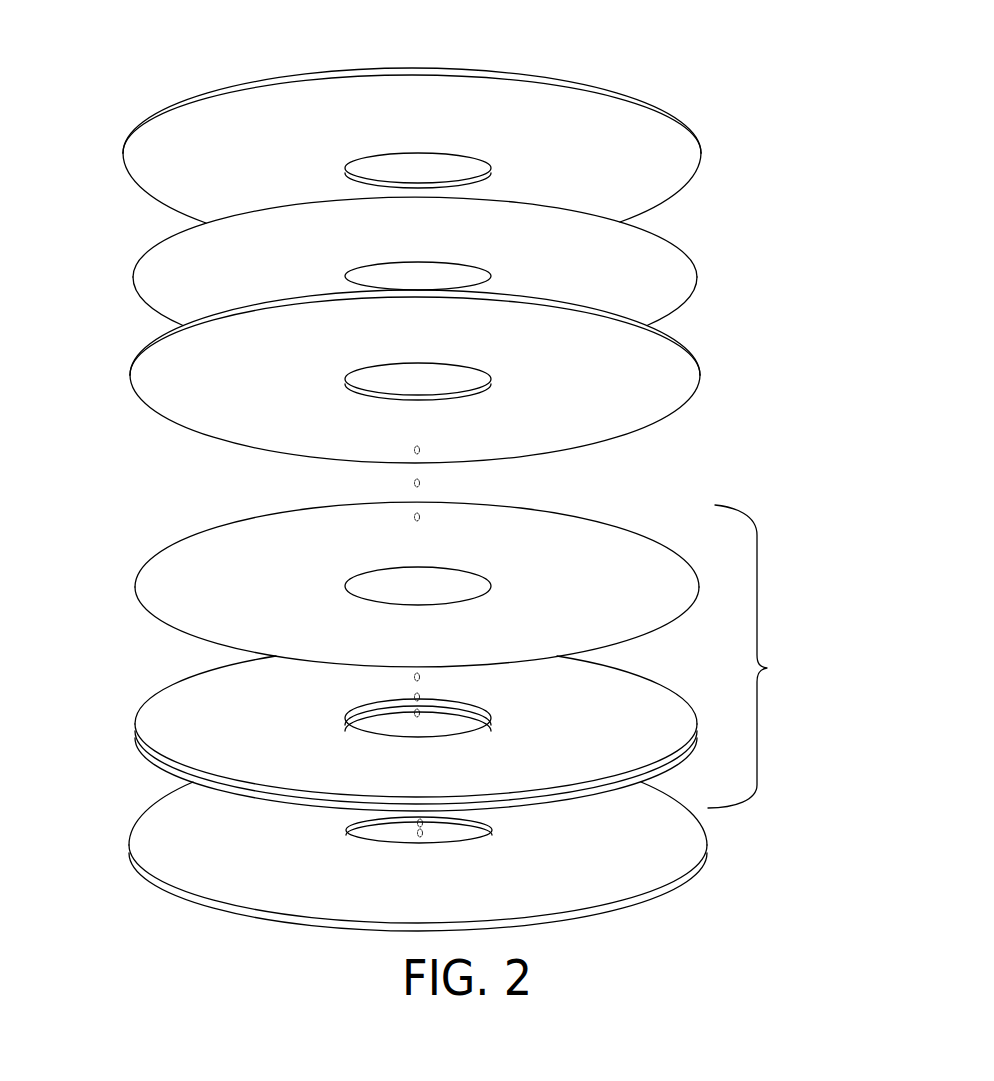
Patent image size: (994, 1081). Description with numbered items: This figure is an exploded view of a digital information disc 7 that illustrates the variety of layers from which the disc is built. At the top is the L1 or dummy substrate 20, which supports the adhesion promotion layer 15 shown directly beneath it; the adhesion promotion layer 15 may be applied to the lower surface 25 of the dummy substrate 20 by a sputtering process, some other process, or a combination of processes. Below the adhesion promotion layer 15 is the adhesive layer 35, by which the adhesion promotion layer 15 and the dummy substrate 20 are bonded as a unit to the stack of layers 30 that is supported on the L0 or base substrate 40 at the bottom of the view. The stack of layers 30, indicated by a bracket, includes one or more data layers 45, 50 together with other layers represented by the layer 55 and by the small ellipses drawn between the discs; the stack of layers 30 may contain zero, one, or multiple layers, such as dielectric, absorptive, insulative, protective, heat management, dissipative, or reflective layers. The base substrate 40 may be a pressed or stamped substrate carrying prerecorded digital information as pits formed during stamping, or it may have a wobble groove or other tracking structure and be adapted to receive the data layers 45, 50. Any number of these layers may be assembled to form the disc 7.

The digital information disc 7 is at (768, 113).
The dummy substrate 20 is at (153, 113).
The lower surface 25 is at (680, 163).
The adhesion promotion layer 15 is at (152, 272).
The adhesive layer 35 is at (176, 385).
The layer 55 is at (171, 543).
The data layer 45 is at (152, 714).
The data layer 50 is at (149, 758).
The base substrate 40 is at (146, 808).
The stack of layers 30 is at (756, 656).